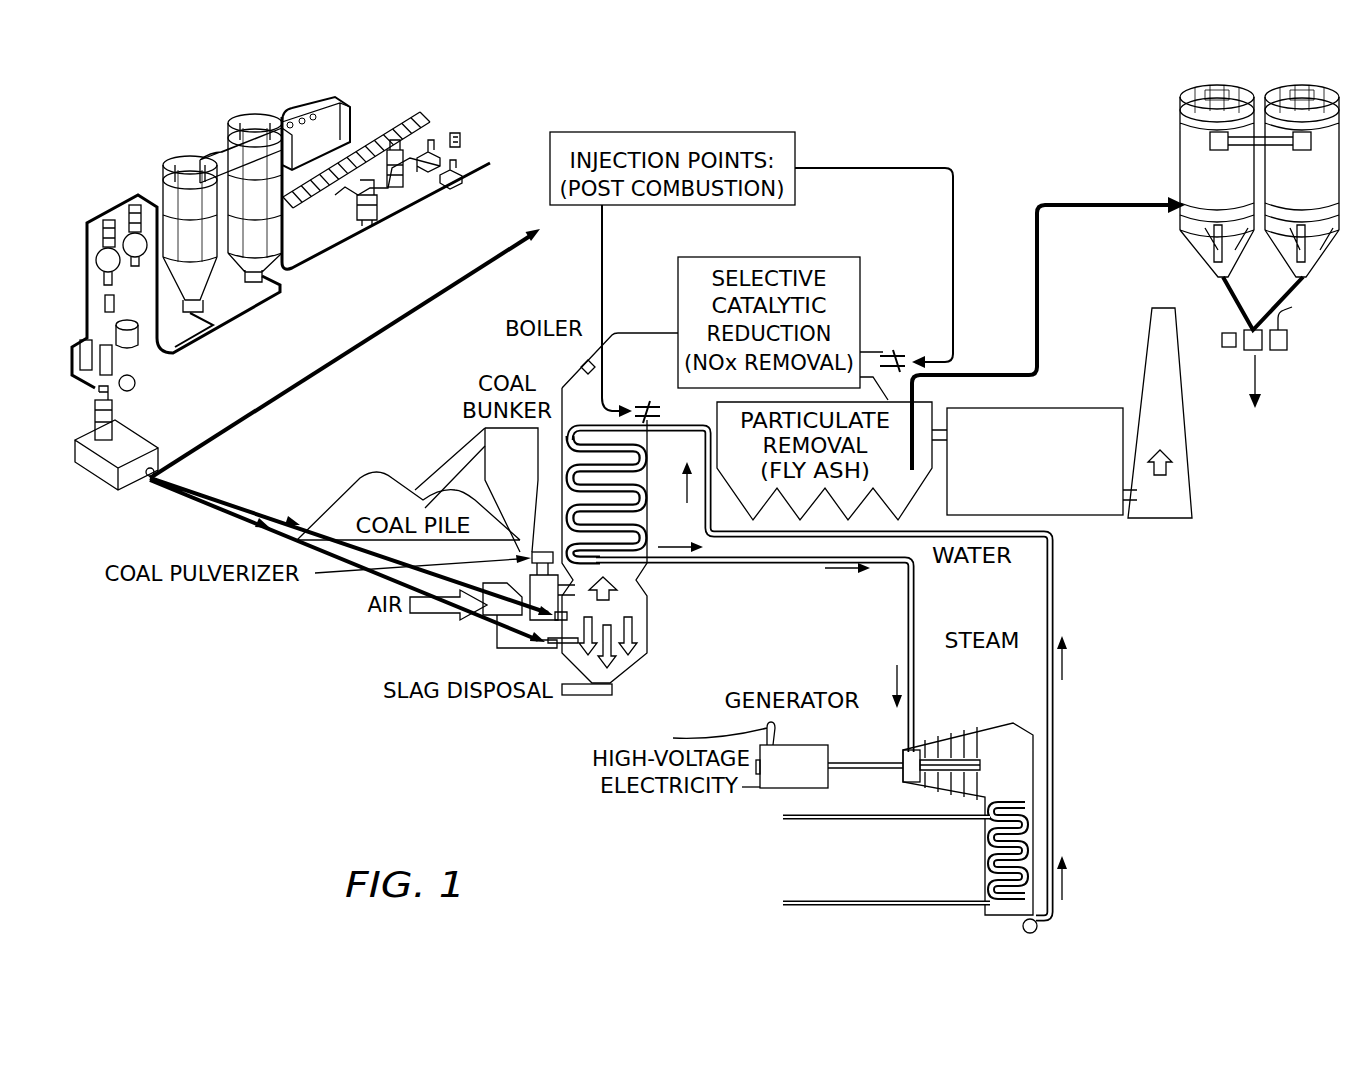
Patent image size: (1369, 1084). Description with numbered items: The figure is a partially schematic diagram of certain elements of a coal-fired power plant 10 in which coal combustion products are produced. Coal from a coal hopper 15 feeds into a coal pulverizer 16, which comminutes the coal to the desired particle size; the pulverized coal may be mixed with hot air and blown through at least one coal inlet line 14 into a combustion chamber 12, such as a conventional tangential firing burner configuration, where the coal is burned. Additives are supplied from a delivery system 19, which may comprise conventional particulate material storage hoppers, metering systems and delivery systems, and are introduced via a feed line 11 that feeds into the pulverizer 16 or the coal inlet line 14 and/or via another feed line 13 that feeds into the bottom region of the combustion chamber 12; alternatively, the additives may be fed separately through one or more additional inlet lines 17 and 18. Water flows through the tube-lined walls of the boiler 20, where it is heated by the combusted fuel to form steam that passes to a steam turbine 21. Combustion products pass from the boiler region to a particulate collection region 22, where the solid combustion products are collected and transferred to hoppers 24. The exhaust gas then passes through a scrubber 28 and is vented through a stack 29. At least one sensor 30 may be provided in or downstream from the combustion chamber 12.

The coal-fired power plant 10 is at (292, 663).
The feed line 11 is at (240, 493).
The combustion chamber 12 is at (637, 612).
The feed line 13 is at (222, 502).
The coal inlet line 14 is at (558, 632).
The coal hopper 15 is at (485, 464).
The coal pulverizer 16 is at (553, 550).
The additional inlet line 17 is at (603, 290).
The additional inlet line 18 is at (945, 352).
The delivery system 19 is at (490, 115).
The boiler 20 is at (636, 468).
The steam turbine 21 is at (1023, 790).
The particulate collection region 22 is at (800, 522).
The hoppers 24 is at (1184, 137).
The scrubber 28 is at (1073, 408).
The stack 29 is at (1186, 491).
The sensor 30 is at (582, 366).